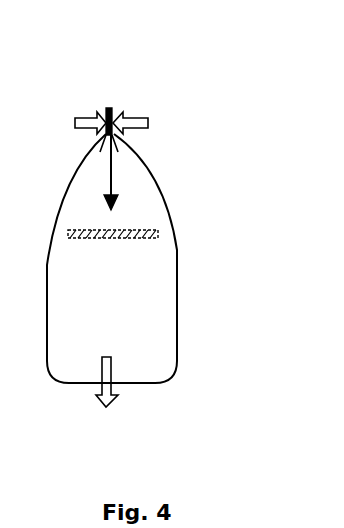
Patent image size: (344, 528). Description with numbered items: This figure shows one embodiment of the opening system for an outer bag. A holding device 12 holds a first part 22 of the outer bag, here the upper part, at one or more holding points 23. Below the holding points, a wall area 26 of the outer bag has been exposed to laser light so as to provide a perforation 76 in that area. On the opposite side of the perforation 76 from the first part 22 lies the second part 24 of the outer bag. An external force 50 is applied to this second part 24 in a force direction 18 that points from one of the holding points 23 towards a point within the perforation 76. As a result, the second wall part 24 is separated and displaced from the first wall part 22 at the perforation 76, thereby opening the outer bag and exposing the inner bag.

The holding device 12 is at (139, 118).
The force direction 18 is at (112, 168).
The first part of the outer bag 22 is at (145, 195).
The holding point 23 is at (106, 114).
The second part of the outer bag 24 is at (118, 306).
The wall area of the outer bag 26 is at (158, 234).
The perforation 76 is at (113, 234).
The external force 50 is at (113, 390).